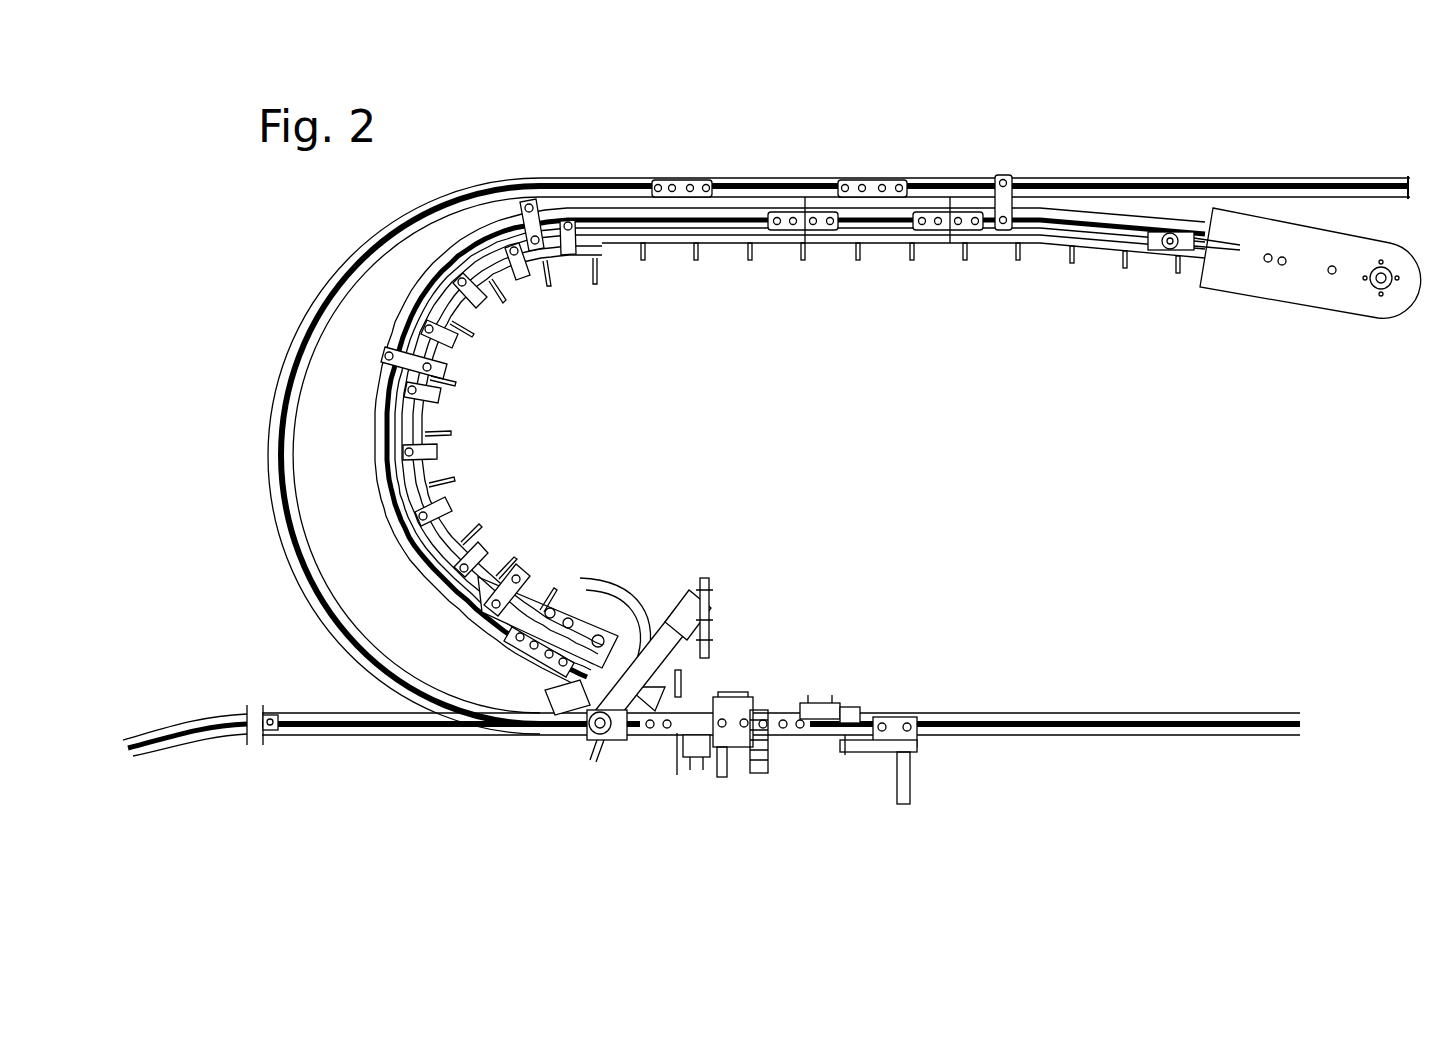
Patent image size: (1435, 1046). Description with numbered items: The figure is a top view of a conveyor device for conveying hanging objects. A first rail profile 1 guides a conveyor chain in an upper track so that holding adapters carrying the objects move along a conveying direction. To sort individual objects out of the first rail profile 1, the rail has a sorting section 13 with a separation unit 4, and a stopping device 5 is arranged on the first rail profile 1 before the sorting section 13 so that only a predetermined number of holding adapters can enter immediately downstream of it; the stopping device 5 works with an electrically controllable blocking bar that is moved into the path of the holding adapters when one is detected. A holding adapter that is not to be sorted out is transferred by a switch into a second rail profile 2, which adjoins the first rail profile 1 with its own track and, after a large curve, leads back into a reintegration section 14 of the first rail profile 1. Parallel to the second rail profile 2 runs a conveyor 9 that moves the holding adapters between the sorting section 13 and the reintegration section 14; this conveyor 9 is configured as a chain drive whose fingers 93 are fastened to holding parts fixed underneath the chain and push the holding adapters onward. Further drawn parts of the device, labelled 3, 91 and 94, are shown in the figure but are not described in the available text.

The first rail profile 1 is at (288, 353).
The second rail profile 2 is at (380, 537).
The rail coupling 3 is at (297, 727).
The separation unit 4 is at (745, 672).
The stopping device 5 is at (930, 758).
The conveyor 9 is at (478, 405).
The sorting section 13 is at (697, 782).
The reintegration section 14 is at (725, 168).
The straight guide rail 91 is at (879, 246).
The fingers 93 is at (800, 252).
The drive unit 94 is at (1318, 288).